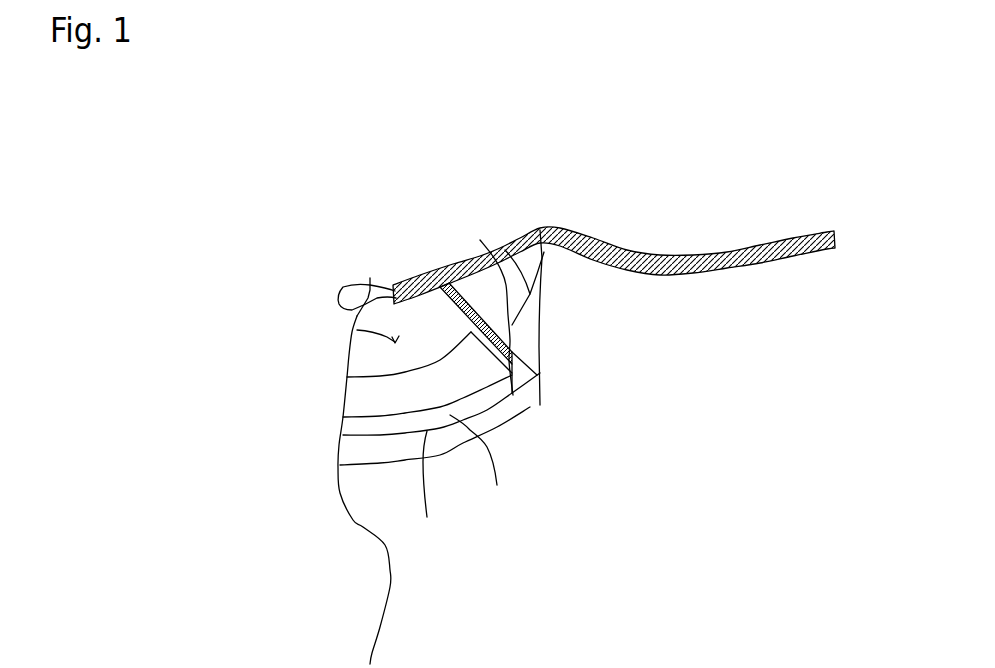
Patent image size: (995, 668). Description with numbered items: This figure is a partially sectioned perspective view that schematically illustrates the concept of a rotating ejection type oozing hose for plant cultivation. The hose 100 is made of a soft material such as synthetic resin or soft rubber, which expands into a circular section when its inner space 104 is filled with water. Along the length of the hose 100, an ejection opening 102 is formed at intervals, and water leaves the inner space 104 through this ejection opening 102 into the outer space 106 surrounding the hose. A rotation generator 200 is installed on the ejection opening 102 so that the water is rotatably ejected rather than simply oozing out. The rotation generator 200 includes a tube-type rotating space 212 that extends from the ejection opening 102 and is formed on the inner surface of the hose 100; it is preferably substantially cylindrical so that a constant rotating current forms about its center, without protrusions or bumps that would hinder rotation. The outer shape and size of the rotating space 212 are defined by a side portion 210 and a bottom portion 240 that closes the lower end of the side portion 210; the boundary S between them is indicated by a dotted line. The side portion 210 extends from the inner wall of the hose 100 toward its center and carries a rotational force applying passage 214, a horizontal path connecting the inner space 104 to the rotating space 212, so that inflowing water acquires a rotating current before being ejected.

The hose 100 is at (677, 258).
The ejection opening 102 is at (370, 278).
The inner space 104 is at (624, 322).
The outer space 106 is at (593, 188).
The rotation generator 200 is at (452, 460).
The side portion 210 is at (540, 230).
The rotating space 212 is at (353, 332).
The rotational force applying passage 214 is at (480, 240).
The bottom portion 240 is at (512, 393).
The boundary S is at (416, 543).